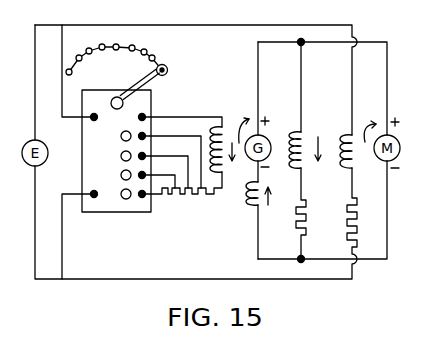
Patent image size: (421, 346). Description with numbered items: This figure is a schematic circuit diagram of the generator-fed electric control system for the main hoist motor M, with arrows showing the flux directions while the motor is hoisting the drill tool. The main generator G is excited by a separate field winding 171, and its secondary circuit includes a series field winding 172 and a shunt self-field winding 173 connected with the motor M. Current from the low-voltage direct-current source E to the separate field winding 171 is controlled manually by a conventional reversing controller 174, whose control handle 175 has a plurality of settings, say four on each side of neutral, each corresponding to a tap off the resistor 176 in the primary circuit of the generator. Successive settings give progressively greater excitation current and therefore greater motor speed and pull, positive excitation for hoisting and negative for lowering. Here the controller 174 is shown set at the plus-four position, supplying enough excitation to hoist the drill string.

The separate field winding 171 is at (223, 126).
The series field winding 172 is at (251, 204).
The shunt self-field winding 173 is at (305, 133).
The reversing controller 174 is at (152, 105).
The control handle 175 is at (157, 71).
The resistor 176 is at (181, 200).